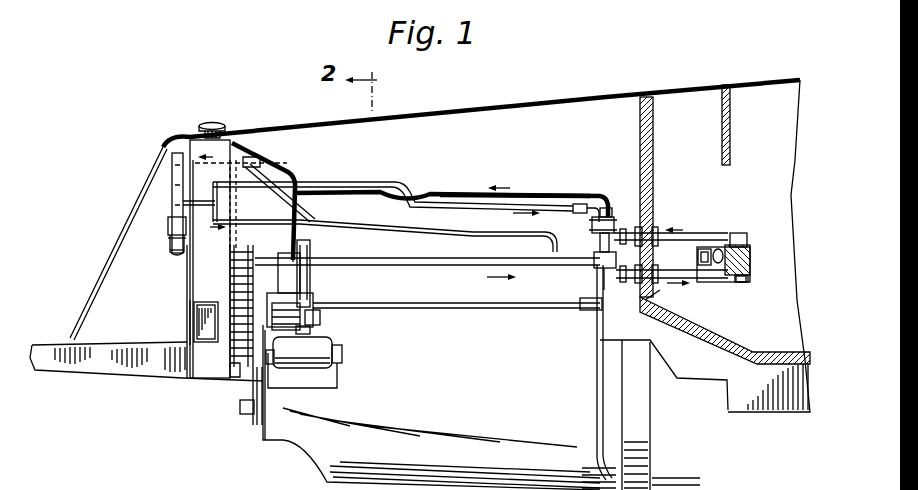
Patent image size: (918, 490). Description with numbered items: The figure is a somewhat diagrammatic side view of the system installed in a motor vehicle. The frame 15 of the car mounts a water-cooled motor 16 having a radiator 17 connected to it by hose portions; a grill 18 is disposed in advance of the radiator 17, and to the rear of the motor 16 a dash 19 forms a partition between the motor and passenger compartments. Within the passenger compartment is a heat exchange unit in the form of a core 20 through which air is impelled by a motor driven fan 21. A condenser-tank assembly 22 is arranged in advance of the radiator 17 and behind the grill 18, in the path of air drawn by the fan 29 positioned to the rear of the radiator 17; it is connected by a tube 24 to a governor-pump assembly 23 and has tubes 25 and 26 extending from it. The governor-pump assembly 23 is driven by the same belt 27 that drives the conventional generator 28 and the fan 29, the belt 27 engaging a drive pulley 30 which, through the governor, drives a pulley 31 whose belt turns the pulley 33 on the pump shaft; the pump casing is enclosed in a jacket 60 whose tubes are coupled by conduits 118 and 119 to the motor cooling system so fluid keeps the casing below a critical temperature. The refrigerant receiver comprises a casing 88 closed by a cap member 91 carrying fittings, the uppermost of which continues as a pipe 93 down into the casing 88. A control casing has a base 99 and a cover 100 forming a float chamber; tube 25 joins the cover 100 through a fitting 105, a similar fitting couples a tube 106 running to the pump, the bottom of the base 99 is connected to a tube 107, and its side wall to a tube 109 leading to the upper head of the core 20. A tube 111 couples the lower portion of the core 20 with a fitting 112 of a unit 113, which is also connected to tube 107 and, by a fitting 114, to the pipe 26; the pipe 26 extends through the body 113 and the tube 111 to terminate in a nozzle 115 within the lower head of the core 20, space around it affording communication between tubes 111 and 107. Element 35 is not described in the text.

The frame 15 is at (51, 343).
The motor 16 is at (437, 377).
The radiator 17 is at (193, 283).
The grill 18 is at (125, 222).
The dash 19 is at (655, 118).
The core 20 is at (745, 237).
The motor driven fan 21 is at (707, 258).
The condenser-tank assembly 22 is at (160, 165).
The governor-pump assembly 23 is at (318, 281).
The tube 24 is at (285, 165).
The tube 25 is at (370, 190).
The tube 26 is at (197, 197).
The belt 27 is at (253, 385).
The generator 28 is at (347, 355).
The fan 29 is at (298, 175).
The drive wheel or pulley 30 is at (263, 328).
The pulley 31 is at (310, 328).
The pulley 33 is at (305, 265).
The gear 35 is at (320, 317).
The jacket 60 is at (267, 270).
The casing 88 is at (167, 238).
The cap member 91 is at (160, 218).
The pipe 93 is at (167, 250).
The base of casing 99 is at (593, 250).
The cover portion 100 is at (613, 217).
The fitting 105 is at (590, 222).
The tube 106 is at (547, 193).
The tube 107 is at (598, 268).
The tube 109 is at (627, 232).
The tube 111 is at (660, 292).
The fitting 112 is at (616, 280).
The unit 113 is at (610, 276).
The fitting 114 is at (602, 268).
The nozzle 115 is at (741, 282).
The conduit 118 is at (227, 288).
The conduit 119 is at (473, 233).